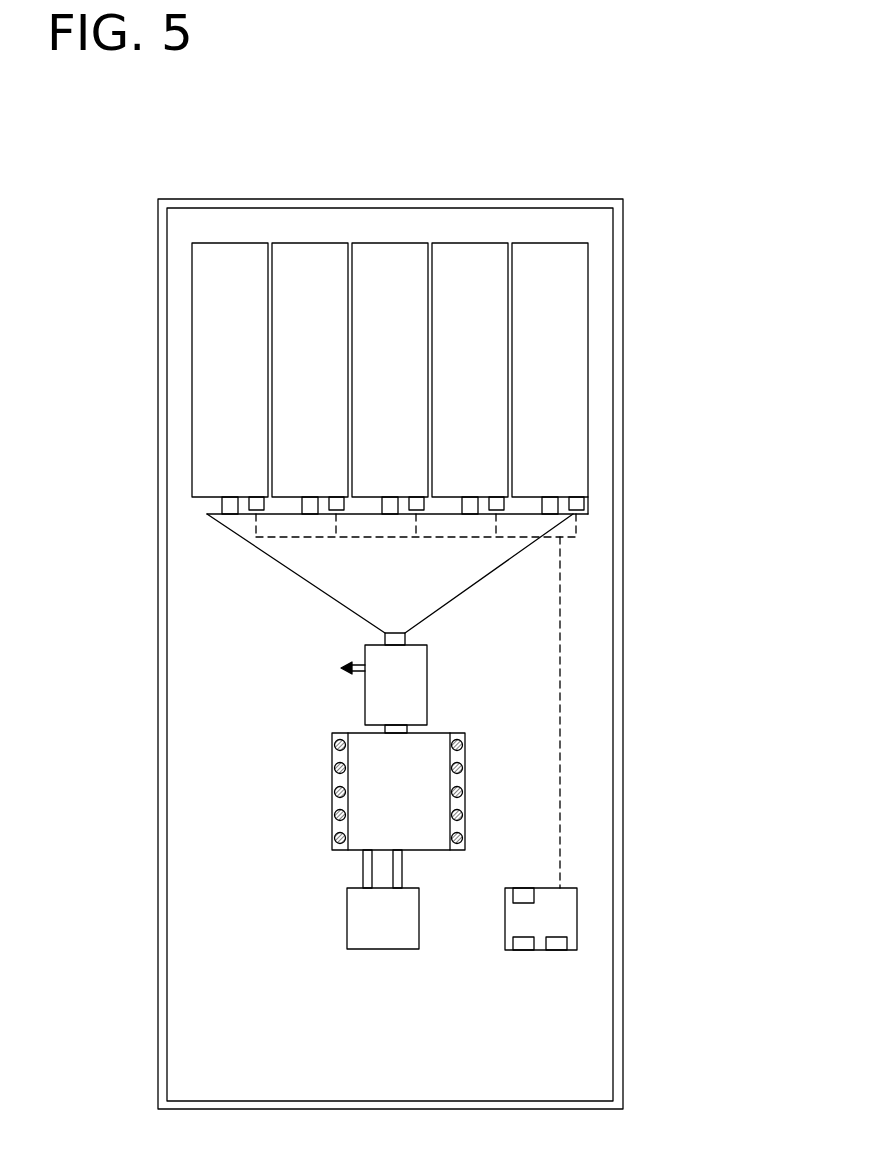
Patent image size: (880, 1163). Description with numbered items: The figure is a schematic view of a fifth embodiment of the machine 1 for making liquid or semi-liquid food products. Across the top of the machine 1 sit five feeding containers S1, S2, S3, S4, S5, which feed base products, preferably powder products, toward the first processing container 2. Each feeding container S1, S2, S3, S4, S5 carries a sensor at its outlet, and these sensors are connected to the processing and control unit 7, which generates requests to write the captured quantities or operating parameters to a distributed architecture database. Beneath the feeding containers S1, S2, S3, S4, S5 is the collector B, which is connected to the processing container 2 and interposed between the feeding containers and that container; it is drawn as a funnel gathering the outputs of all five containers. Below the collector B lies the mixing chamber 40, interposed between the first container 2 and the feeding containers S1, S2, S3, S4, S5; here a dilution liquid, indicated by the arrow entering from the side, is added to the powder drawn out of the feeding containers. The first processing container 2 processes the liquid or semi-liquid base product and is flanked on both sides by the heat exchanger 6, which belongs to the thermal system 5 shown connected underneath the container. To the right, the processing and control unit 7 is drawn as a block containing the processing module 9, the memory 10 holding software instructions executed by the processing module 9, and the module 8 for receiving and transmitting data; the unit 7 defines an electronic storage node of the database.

The machine 1 is at (673, 192).
The feeding container S1 is at (246, 335).
The feeding container S2 is at (326, 335).
The feeding container S3 is at (406, 335).
The feeding container S4 is at (486, 335).
The feeding container S5 is at (566, 335).
The collector B is at (403, 583).
The mixing chamber 40 is at (411, 694).
The first processing container 2 is at (406, 803).
The heat exchanger 6 is at (322, 785).
The thermal system 5 is at (390, 930).
The processing and control unit 7 is at (583, 930).
The processing module 9 is at (522, 893).
The memory 10 is at (524, 950).
The module for receiving and transmitting data 8 is at (556, 960).